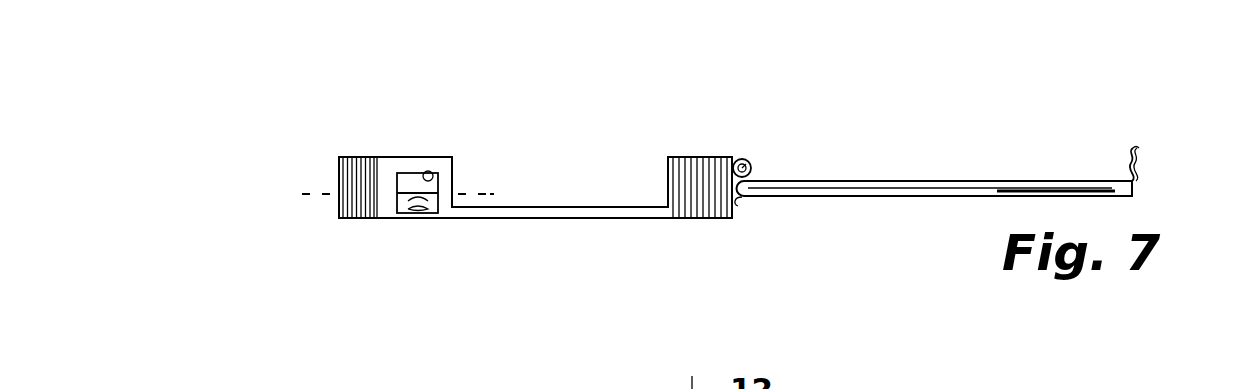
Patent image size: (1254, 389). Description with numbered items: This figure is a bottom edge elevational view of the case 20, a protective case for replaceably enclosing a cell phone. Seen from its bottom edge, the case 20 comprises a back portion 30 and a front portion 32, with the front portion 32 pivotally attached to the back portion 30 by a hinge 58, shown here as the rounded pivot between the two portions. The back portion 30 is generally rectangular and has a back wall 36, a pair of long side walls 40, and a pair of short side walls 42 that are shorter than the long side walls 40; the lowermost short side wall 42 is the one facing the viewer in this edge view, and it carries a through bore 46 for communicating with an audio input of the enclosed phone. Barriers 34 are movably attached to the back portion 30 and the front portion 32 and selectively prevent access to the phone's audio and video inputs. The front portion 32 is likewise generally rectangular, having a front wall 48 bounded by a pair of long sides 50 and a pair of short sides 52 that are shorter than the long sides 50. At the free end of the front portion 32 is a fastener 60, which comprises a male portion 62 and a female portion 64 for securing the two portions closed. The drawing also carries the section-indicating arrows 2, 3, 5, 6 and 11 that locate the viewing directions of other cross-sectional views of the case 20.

The case 20 is at (222, 113).
The back portion 30 is at (548, 228).
The front portion 32 is at (925, 170).
The barriers 34 is at (414, 226).
The back wall 36 is at (598, 230).
The long side walls 40 is at (330, 207).
The short side walls 42 is at (405, 150).
The through bore 46 is at (430, 171).
The front wall 48 is at (1006, 178).
The long sides 50 is at (742, 200).
The short sides 52 is at (845, 186).
The hinge 58 is at (750, 163).
The fastener 60 is at (1133, 142).
The male portion 62 is at (338, 184).
The female portion 64 is at (1136, 152).
The section line 2- 2 is at (740, 240).
The section line 3- 3 is at (740, 132).
The section line 5- 5 is at (1181, 173).
The section line 6- 6 is at (246, 178).
The section line 11- 11 is at (317, 182).